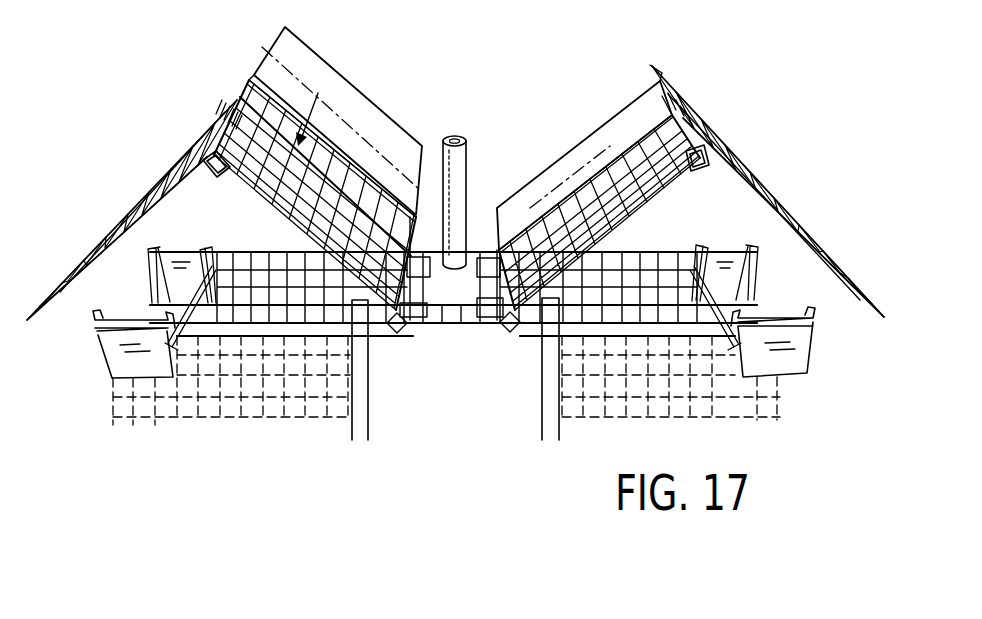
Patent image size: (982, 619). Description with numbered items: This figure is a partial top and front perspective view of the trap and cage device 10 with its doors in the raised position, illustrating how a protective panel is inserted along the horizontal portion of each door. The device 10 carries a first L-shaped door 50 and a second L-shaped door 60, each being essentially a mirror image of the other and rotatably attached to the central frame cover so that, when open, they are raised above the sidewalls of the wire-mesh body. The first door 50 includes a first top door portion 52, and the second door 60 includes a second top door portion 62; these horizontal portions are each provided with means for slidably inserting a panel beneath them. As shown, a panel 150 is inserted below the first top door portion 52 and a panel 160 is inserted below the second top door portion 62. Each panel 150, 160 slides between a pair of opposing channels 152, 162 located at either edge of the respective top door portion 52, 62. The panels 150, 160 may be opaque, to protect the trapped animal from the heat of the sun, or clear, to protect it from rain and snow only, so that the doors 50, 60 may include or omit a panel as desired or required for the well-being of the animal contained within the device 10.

The trap and cage device 10 is at (778, 142).
The first L-shaped door 50 is at (134, 203).
The first top door portion 52 is at (233, 102).
The second L-shaped door 60 is at (852, 216).
The second top door portion 62 is at (683, 118).
The panel 150 is at (435, 78).
The channels 152 is at (207, 168).
The panel 160 is at (627, 103).
The channels 162 is at (695, 165).